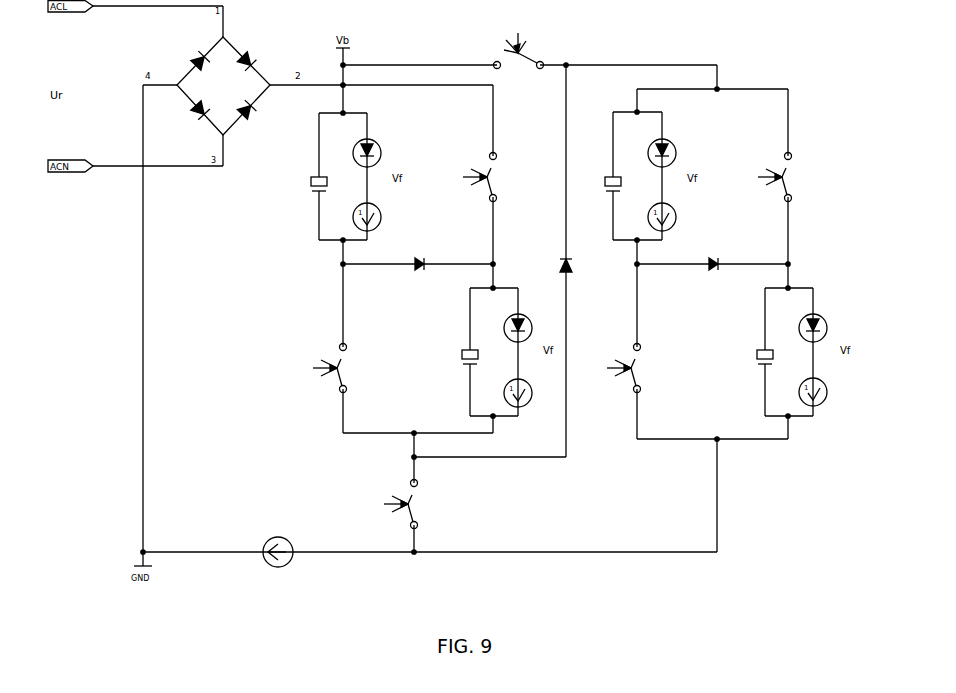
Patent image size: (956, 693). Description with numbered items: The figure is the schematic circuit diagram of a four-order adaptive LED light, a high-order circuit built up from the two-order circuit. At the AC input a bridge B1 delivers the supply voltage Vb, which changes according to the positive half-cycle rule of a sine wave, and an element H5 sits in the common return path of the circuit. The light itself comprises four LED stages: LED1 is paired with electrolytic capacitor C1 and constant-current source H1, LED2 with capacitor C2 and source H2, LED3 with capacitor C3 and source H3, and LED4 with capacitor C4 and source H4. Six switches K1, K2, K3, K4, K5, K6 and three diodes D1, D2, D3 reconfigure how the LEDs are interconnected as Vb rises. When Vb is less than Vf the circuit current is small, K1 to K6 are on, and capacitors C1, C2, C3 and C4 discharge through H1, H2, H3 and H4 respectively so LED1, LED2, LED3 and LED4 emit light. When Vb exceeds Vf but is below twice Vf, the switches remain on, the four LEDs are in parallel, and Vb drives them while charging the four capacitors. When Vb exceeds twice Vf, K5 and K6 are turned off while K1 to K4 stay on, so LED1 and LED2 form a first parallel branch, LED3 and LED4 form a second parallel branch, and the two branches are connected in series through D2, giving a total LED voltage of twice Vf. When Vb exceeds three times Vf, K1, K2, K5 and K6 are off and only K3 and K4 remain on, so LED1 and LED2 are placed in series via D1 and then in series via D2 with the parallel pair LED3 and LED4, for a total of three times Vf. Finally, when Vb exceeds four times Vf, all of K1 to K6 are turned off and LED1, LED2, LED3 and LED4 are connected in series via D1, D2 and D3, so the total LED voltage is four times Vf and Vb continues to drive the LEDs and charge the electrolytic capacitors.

The bridge rectifier B1 is at (236, 86).
The electrolytic capacitor C1 is at (308, 184).
The electrolytic capacitor C2 is at (458, 357).
The electrolytic capacitor C3 is at (602, 184).
The electrolytic capacitor C4 is at (753, 358).
The LED LED1 is at (386, 153).
The LED LED2 is at (532, 327).
The LED LED3 is at (681, 153).
The LED LED4 is at (831, 328).
The constant-current source H1 is at (375, 217).
The constant-current source H2 is at (526, 396).
The constant-current source H3 is at (670, 217).
The constant-current source H4 is at (822, 395).
The current source / lamp H5 is at (286, 544).
The switch K1 is at (486, 177).
The switch K2 is at (335, 368).
The switch K3 is at (781, 177).
The switch K4 is at (629, 368).
The switch K5 is at (524, 50).
The switch K6 is at (407, 504).
The diode D1 is at (418, 256).
The diode D2 is at (574, 266).
The diode D3 is at (712, 256).